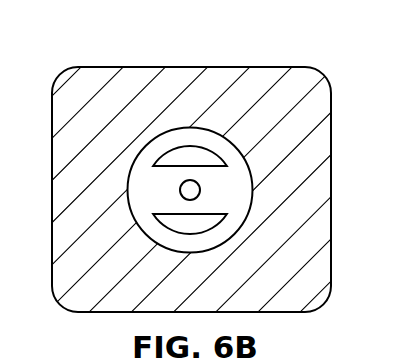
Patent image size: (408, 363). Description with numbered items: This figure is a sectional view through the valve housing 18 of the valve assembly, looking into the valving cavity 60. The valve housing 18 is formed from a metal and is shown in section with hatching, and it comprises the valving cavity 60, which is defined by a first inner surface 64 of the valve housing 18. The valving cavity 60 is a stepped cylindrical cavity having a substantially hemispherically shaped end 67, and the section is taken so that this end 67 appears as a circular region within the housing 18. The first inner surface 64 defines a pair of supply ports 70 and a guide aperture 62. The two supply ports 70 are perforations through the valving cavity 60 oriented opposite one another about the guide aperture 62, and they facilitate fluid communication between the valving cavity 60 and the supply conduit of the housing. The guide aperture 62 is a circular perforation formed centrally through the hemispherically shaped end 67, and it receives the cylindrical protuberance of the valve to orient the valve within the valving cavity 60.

The valve housing 18 is at (289, 67).
The valving cavity 60 is at (240, 178).
The guide aperture 62 is at (180, 190).
The first inner surface 64 is at (247, 193).
The substantially hemispherically shaped end 67 is at (155, 233).
The supply ports 70 is at (178, 150).